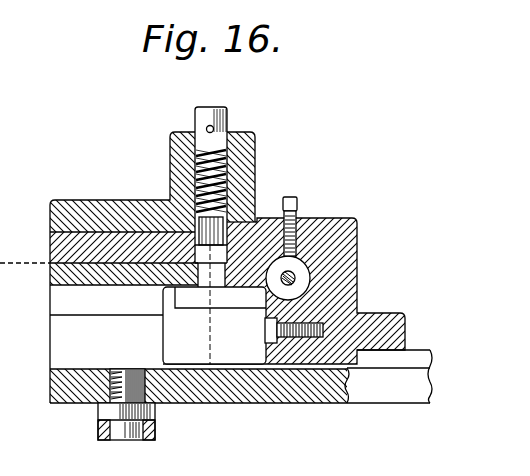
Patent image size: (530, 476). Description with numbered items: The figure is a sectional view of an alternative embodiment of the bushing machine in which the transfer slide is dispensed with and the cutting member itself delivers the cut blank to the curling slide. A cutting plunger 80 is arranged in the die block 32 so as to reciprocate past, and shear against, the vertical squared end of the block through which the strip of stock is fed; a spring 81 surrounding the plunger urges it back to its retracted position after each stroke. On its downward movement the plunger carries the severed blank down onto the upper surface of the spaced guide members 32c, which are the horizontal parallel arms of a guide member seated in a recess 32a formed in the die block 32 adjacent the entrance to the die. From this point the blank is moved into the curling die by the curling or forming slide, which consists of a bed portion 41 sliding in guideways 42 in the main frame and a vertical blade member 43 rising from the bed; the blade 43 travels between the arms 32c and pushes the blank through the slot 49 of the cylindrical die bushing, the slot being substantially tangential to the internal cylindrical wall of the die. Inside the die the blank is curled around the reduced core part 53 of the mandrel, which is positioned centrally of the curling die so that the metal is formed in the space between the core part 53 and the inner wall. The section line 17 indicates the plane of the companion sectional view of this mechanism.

The section line 17- 17 is at (228, 440).
The spring 81 is at (195, 158).
The cutting plunger 80 is at (195, 183).
The recess 32a is at (258, 262).
The die block 32 is at (357, 244).
The core part 53 is at (295, 281).
The blade member 43 is at (62, 300).
The guideways 42 is at (77, 404).
The spaced arms 32c is at (203, 307).
The slot 49 is at (270, 309).
The bed portion 41 is at (302, 393).